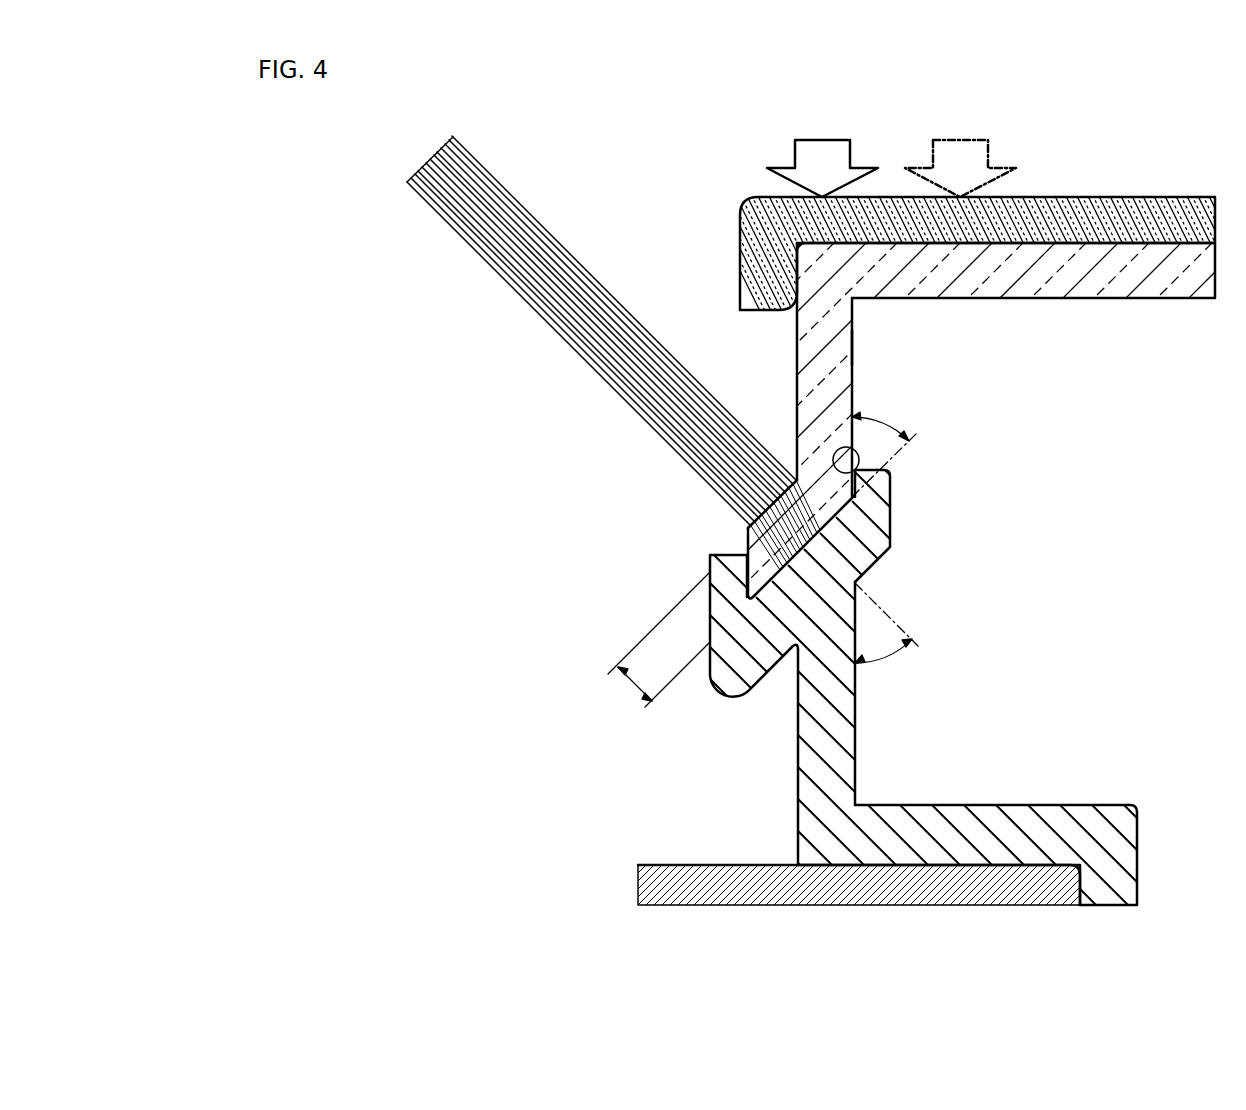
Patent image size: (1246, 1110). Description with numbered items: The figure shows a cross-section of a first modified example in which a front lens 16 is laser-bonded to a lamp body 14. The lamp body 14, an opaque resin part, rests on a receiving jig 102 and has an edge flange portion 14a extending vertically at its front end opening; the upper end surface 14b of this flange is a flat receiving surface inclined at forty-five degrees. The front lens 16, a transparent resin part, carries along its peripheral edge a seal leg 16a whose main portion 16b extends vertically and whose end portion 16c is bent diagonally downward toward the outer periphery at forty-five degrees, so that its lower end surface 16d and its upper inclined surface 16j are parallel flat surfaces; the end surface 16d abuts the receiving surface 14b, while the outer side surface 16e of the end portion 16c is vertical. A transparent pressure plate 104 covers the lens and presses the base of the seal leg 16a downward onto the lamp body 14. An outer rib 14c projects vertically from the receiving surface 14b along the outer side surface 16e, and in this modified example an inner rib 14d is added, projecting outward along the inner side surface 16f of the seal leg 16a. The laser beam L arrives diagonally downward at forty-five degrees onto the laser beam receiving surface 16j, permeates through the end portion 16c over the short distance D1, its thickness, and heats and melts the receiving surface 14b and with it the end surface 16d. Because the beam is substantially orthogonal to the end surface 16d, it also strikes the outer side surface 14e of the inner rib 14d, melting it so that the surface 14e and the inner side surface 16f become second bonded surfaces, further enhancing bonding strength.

The lamp body 14 is at (1065, 790).
The edge flange portion 14a is at (863, 737).
The end surface (receiving surface) 14b is at (743, 545).
The outer rib 14c is at (727, 579).
The inner rib 14d is at (877, 487).
The outer side surface of inner rib 14e is at (853, 440).
The front lens 16 is at (1058, 315).
The seal leg 16a is at (857, 373).
The main portion of seal leg 16b is at (818, 378).
The end portion of seal leg 16c is at (791, 480).
The end surface of seal leg 16d is at (858, 587).
The outer side surface of end portion 16e is at (740, 540).
The inner side surface of seal leg 16f is at (853, 348).
The upper inclined surface (laser beam receiving surface) 16j is at (760, 512).
The receiving jig 102 is at (711, 860).
The transparent pressure plate 104 is at (733, 208).
The laser beam L is at (572, 323).
The permeation distance D1 is at (656, 645).